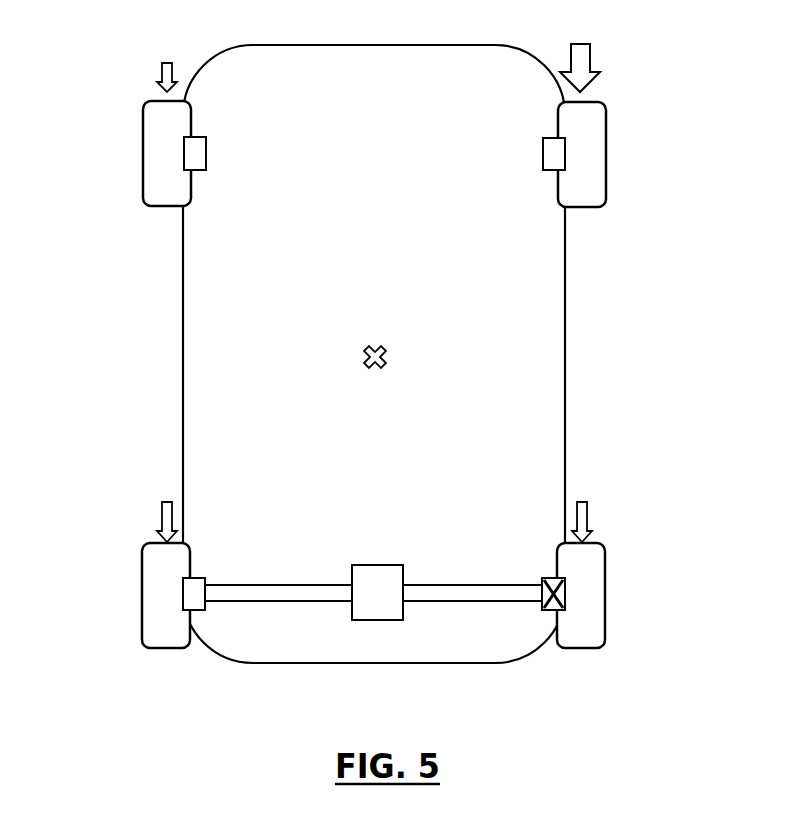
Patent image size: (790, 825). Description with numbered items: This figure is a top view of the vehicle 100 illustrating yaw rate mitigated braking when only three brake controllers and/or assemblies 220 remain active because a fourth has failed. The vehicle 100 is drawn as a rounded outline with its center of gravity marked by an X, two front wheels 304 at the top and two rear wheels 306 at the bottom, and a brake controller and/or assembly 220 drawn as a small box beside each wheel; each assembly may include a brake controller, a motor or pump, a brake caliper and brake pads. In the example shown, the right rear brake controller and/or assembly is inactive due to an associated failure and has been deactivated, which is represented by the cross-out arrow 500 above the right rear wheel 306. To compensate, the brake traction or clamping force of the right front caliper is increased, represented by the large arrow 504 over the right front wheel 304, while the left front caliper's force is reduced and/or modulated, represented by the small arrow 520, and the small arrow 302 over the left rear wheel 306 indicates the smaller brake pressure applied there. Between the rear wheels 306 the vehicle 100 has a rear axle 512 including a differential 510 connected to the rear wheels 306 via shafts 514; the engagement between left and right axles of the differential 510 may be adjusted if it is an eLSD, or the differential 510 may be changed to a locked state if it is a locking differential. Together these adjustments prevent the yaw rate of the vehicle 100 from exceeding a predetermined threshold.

The vehicle 100 is at (548, 353).
The brake controllers and/or assemblies 220 is at (184, 158).
The small arrow 302 is at (165, 513).
The front wheels 304 is at (147, 152).
The rear wheels 306 is at (147, 588).
The cross-out arrow 500 is at (587, 505).
The large arrow 504 is at (578, 71).
The differential 510 is at (367, 621).
The rear axle 512 is at (375, 590).
The shafts 514 is at (280, 603).
The small arrow 520 is at (163, 84).